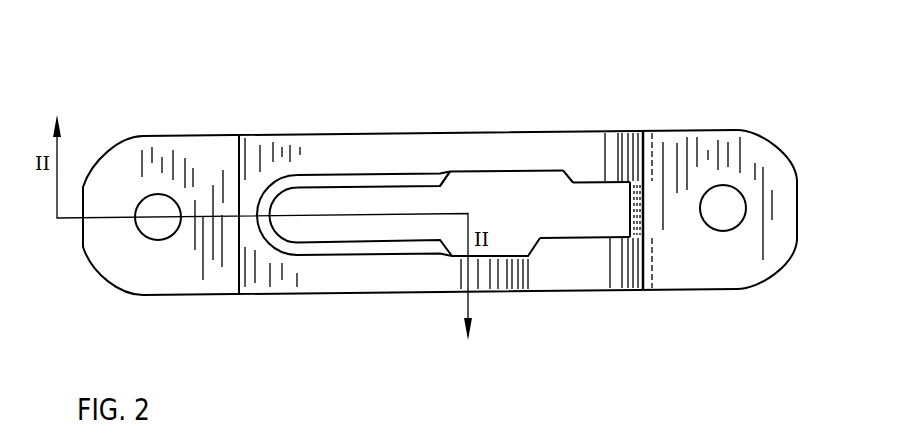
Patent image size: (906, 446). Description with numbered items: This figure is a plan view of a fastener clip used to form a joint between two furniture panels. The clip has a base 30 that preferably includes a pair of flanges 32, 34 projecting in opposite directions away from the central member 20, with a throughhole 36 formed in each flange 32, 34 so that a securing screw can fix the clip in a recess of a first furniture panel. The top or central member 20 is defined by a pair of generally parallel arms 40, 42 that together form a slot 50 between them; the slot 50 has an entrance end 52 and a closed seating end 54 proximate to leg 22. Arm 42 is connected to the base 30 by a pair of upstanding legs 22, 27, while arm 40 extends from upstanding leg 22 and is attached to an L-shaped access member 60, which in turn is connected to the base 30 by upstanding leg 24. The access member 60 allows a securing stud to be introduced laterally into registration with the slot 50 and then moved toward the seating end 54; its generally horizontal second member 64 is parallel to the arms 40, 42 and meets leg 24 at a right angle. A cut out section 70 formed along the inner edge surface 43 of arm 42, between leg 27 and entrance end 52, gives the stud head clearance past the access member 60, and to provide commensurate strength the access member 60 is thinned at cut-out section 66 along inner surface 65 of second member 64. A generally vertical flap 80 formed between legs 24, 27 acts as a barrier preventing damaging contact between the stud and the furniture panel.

The central member 20 is at (337, 145).
The upstanding leg 22 is at (237, 153).
The upstanding leg 24 is at (644, 272).
The upstanding leg 27 is at (645, 145).
The base 30 is at (718, 113).
The flange 32 is at (110, 257).
The flange 34 is at (787, 185).
The throughhole 36 is at (148, 205).
The arm 40 is at (375, 282).
The arm 42 is at (441, 140).
The inner edge surface 43 is at (594, 185).
The slot 50 is at (394, 193).
The entrance end 52 is at (470, 203).
The seating end 54 is at (283, 225).
The access member 60 is at (512, 285).
The second member 64 is at (592, 280).
The inner surface 65 is at (565, 233).
The cut-out section 66 is at (528, 260).
The cut out section 70 is at (490, 181).
The flap 80 is at (637, 217).